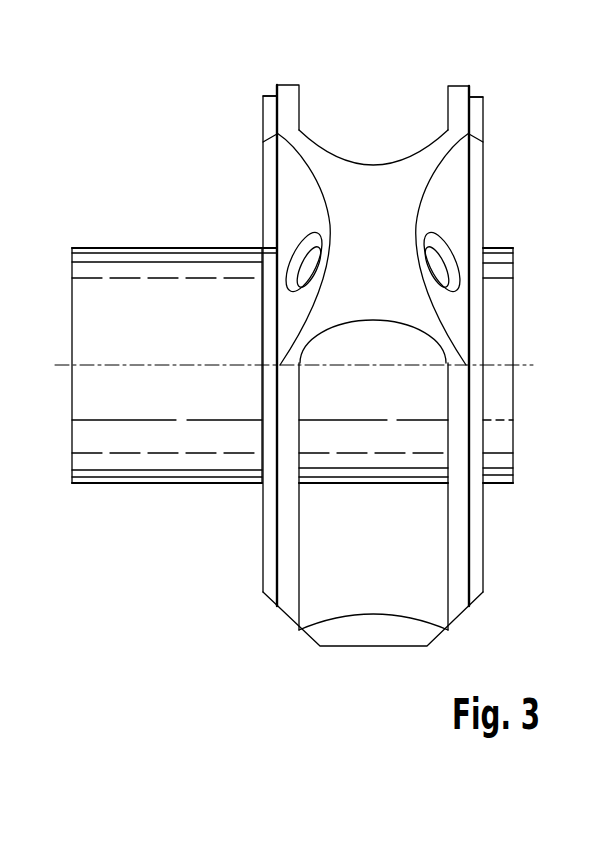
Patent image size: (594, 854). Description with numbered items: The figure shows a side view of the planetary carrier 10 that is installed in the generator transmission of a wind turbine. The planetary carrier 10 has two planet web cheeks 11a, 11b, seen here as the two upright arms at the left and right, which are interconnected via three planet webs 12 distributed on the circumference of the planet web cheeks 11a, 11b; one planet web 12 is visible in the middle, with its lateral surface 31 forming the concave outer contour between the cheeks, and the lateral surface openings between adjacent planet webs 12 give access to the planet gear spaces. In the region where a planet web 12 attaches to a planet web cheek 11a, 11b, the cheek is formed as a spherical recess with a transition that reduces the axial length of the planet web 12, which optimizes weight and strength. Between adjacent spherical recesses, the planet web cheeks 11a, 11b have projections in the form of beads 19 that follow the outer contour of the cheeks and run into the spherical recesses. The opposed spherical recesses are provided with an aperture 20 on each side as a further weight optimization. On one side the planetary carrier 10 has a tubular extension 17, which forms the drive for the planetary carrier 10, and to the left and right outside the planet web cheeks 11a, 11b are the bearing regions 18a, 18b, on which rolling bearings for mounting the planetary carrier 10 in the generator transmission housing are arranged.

The planetary carrier 10 is at (318, 382).
The planet web cheek 11a is at (287, 542).
The planet web cheek 11b is at (460, 542).
The planet web 12 is at (375, 365).
The extension 17 is at (318, 337).
The bearing region 18a is at (250, 246).
The bearing region 18b is at (500, 246).
The bead 19 is at (268, 113).
The aperture 20 is at (303, 256).
The lateral surface 31 is at (347, 195).